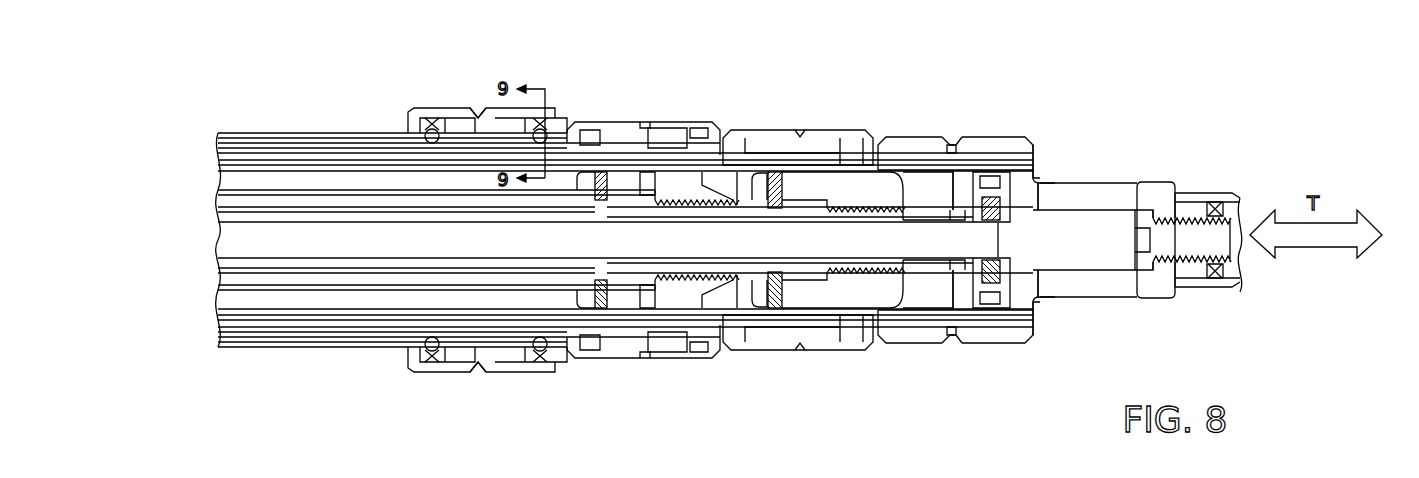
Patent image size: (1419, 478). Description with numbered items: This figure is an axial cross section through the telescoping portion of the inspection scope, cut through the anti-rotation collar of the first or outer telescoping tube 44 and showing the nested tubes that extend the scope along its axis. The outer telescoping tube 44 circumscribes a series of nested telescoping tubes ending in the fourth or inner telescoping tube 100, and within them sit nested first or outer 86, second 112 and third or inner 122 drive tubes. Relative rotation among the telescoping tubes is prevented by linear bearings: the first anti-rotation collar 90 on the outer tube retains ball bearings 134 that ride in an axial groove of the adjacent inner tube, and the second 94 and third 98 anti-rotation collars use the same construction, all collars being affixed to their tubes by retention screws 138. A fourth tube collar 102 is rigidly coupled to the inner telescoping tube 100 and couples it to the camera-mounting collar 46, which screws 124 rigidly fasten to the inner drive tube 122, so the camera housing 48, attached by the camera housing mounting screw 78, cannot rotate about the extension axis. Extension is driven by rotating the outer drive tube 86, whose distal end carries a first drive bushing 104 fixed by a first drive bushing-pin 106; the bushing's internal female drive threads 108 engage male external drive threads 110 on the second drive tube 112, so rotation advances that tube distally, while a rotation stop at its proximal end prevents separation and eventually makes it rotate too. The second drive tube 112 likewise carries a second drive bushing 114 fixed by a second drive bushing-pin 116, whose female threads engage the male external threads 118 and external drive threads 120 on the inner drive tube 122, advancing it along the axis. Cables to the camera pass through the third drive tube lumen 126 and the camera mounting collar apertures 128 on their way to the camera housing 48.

The first or outer telescoping tube 44 is at (258, 133).
The camera-mounting collar 46 is at (1150, 190).
The camera housing 48 is at (1215, 292).
The camera housing mounting screw 78 is at (1212, 240).
The first or outer drive tube 86 is at (218, 200).
The first anti-rotation collar 90 is at (540, 128).
The second anti-rotation collar 94 is at (695, 362).
The third anti-rotation collar 98 is at (848, 340).
The fourth or inner telescoping tube 100 is at (1037, 178).
The fourth tube collar 102 is at (1000, 330).
The first drive bushing 104 is at (667, 195).
The first drive bushing-pin 106 is at (600, 290).
The internal female drive threads 108 is at (703, 180).
The male external drive threads 110 is at (648, 290).
The second drive tube 112 is at (218, 210).
The second drive bushing 114 is at (860, 185).
The second drive bushing-pin 116 is at (783, 290).
The male external threads 118 is at (912, 190).
The male external drive threads 120 is at (888, 262).
The third or inner drive tube 122 is at (218, 266).
The screws 124 is at (1040, 140).
The third drive tube lumen 126 is at (363, 243).
The camera mounting collar apertures 128 is at (1103, 195).
The ball bearings 134 is at (432, 128).
The retention screws 138 is at (480, 108).